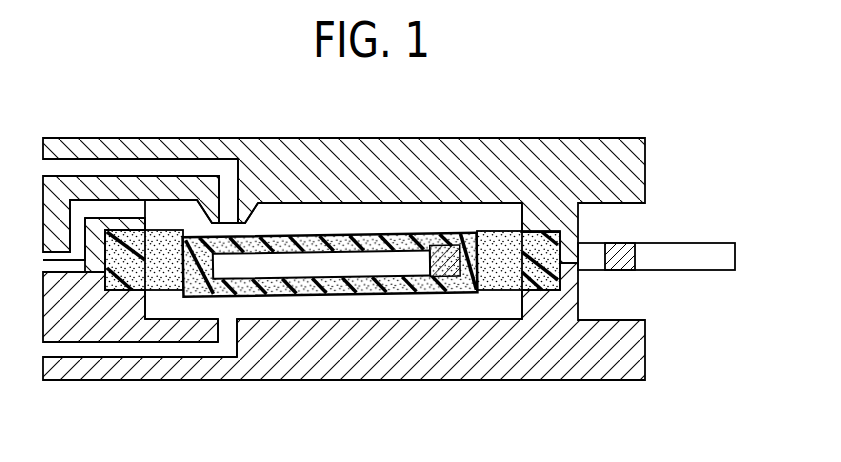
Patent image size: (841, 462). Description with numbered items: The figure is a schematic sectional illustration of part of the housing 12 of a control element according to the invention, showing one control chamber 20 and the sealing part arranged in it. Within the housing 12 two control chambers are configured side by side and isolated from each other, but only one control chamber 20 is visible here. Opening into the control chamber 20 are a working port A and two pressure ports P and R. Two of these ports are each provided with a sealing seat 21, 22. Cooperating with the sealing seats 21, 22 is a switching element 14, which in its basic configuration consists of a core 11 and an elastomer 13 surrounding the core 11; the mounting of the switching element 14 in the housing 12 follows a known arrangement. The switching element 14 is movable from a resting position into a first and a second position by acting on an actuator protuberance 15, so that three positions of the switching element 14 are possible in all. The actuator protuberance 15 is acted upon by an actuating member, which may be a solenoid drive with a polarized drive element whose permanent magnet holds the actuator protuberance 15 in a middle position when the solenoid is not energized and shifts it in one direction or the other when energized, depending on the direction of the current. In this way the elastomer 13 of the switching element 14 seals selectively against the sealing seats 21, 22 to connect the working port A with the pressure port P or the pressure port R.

The core 11 is at (450, 237).
The housing 12 is at (556, 355).
The elastomer 13 is at (350, 237).
The switching element 14 is at (347, 300).
The actuator protuberance 15 is at (722, 256).
The control chamber 20 is at (414, 308).
The sealing seat 21 is at (250, 210).
The sealing seat 22 is at (245, 298).
The working port A is at (102, 210).
The pressure port P is at (168, 172).
The pressure port R is at (115, 350).